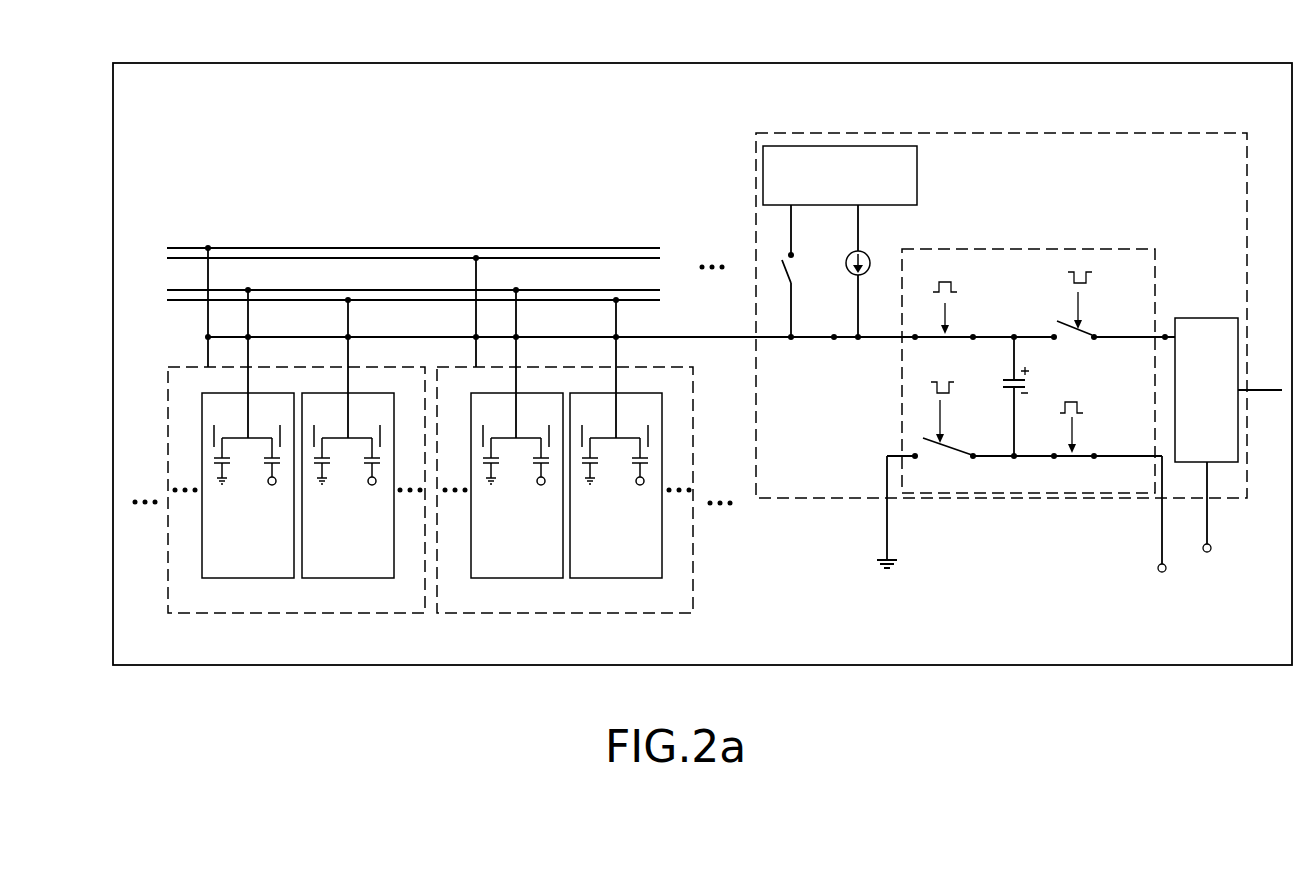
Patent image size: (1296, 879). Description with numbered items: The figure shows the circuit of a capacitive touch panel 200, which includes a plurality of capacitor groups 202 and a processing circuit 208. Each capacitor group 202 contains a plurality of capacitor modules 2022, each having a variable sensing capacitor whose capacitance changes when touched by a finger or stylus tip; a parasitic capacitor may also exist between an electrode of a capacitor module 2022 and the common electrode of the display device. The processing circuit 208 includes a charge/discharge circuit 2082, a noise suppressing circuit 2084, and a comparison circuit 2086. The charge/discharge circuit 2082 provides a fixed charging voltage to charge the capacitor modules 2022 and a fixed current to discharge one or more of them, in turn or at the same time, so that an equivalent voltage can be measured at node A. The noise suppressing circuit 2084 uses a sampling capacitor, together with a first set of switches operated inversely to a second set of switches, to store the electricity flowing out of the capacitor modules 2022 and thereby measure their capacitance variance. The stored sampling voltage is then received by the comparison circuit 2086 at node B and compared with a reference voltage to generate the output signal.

The capacitive touch panel 200 is at (493, 63).
The capacitor group 202 is at (217, 606).
The capacitor module 2022 is at (268, 570).
The processing circuit 208 is at (977, 133).
The charge/discharge circuit 2082 is at (840, 175).
The noise suppressing circuit 2084 is at (1038, 249).
The comparison circuit 2086 is at (1206, 390).